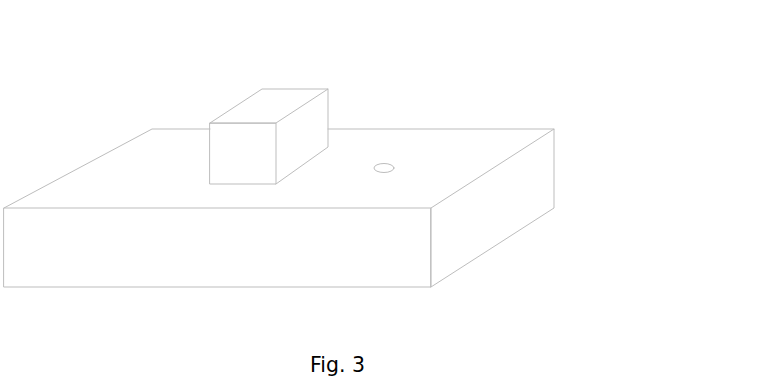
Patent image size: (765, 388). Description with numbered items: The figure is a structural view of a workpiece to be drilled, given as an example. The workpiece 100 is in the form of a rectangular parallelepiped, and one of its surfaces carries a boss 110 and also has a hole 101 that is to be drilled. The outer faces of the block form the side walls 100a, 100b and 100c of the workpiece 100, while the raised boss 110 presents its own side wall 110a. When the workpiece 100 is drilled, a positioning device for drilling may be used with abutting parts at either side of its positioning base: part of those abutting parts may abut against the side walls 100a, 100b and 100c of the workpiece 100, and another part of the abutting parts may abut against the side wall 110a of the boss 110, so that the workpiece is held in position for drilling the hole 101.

The workpiece 100 is at (331, 183).
The side wall 100a is at (343, 275).
The side wall 100b is at (543, 152).
The side wall 100c is at (457, 129).
The hole 101 is at (397, 167).
The boss 110 is at (279, 107).
The side wall of the boss 110a is at (220, 117).